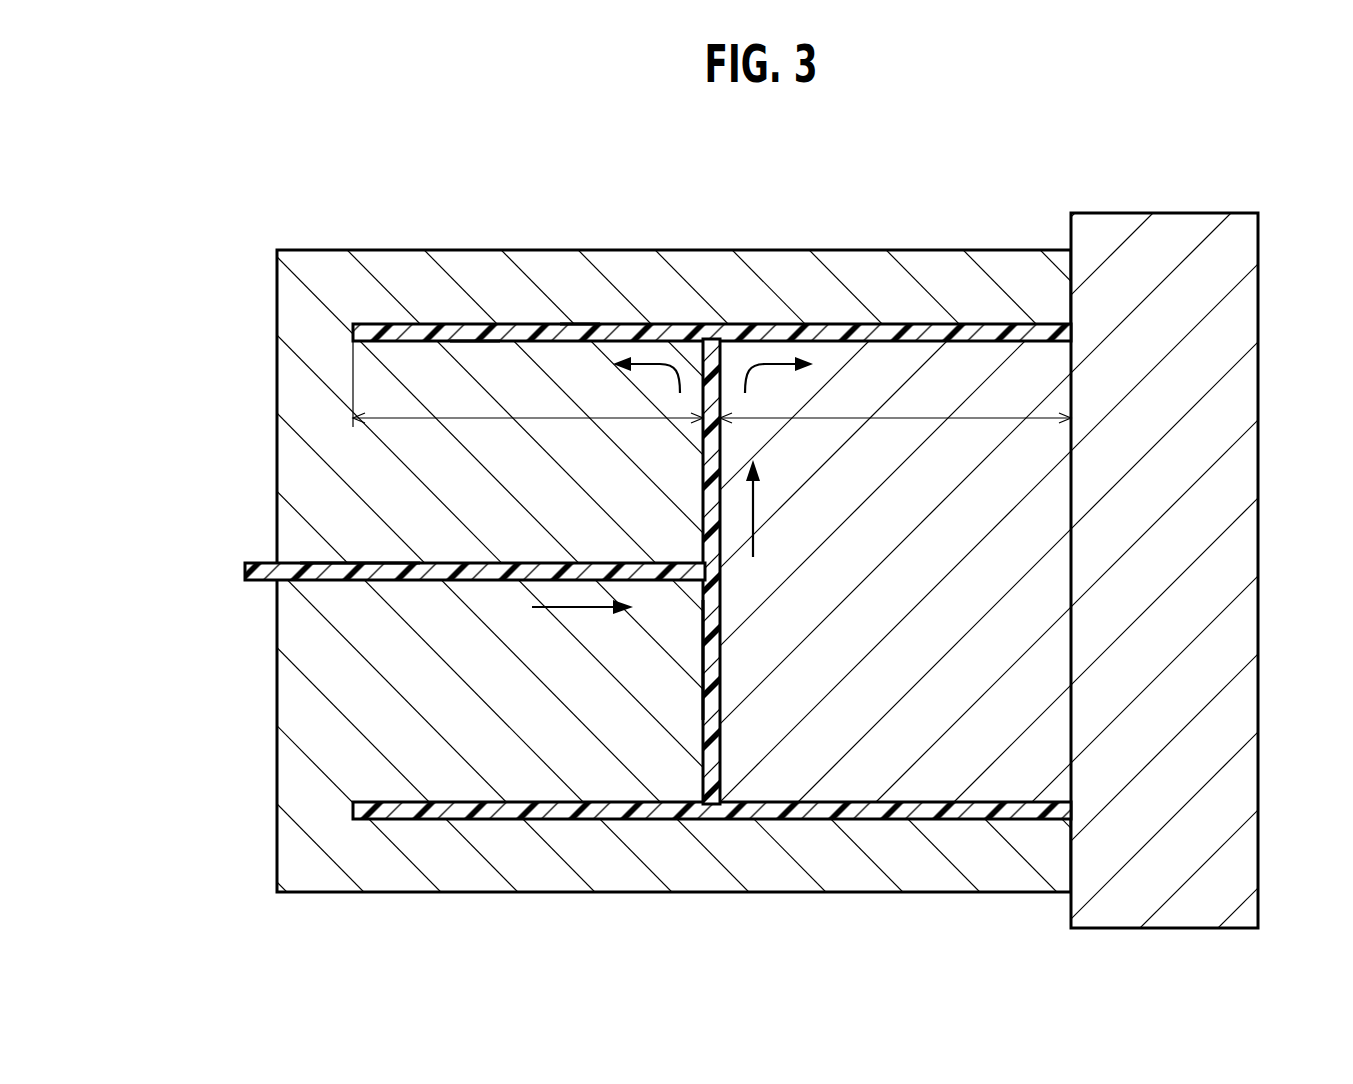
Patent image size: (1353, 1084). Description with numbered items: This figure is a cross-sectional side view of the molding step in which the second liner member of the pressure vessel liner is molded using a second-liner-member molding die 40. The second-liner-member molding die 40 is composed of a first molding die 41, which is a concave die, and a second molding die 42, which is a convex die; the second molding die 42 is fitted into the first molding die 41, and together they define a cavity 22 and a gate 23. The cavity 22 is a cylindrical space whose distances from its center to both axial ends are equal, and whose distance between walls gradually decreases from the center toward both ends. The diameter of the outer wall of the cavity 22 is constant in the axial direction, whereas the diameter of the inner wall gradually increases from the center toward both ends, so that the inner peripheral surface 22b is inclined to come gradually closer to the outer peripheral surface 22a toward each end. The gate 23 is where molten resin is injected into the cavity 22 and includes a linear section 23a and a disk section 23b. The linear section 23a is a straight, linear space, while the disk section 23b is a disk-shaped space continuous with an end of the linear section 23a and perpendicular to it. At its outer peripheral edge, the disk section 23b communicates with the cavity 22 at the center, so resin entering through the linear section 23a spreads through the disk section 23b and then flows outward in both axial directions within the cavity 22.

The second-liner-member molding die 40 is at (960, 198).
The first molding die 41 is at (277, 386).
The second molding die 42 is at (1258, 388).
The cavity 22 is at (712, 323).
The outer peripheral surface 22a is at (583, 324).
The inner peripheral surface 22b is at (470, 336).
The gate 23 is at (150, 527).
The linear section 23a is at (356, 563).
The disk section 23b is at (721, 668).